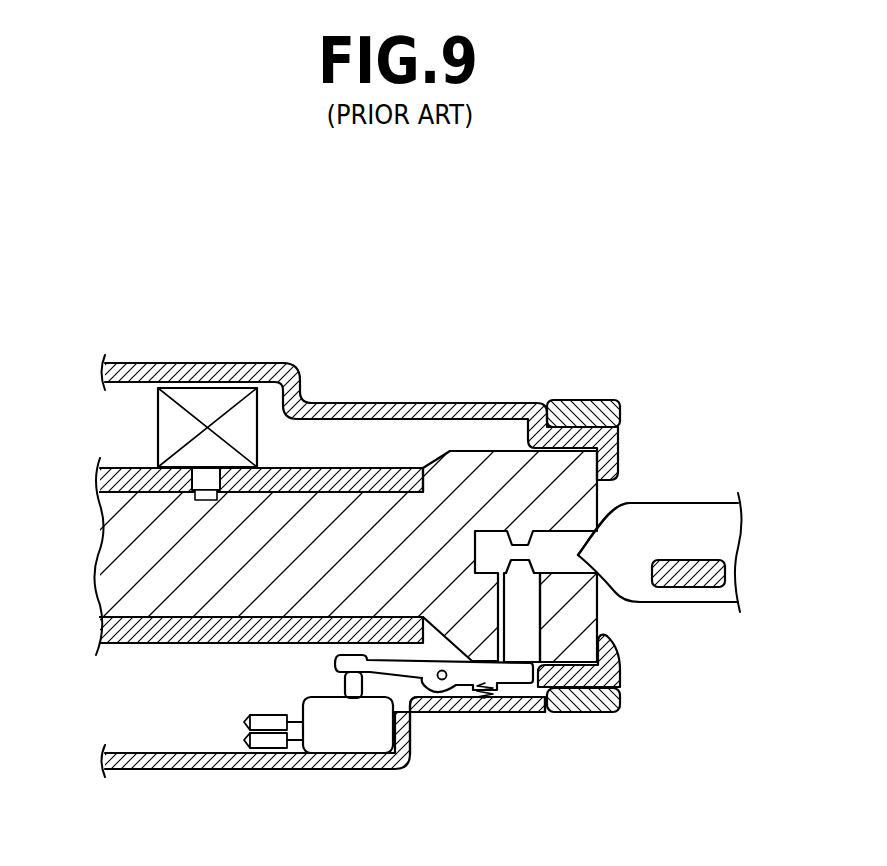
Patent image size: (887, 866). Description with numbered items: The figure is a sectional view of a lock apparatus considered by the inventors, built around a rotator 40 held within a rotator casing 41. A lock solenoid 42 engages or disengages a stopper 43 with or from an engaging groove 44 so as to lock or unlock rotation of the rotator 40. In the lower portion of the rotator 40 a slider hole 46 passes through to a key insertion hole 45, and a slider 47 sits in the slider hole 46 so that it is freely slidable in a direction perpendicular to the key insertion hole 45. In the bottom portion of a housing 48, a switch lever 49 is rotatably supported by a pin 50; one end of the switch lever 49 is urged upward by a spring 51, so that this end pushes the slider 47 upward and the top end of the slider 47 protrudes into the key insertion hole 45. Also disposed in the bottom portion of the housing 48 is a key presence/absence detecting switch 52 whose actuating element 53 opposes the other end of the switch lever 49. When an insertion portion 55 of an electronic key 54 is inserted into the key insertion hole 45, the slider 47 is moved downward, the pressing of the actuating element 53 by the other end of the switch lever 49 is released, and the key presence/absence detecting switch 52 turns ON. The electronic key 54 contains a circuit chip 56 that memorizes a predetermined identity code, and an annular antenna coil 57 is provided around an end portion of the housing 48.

The rotator 40 is at (440, 455).
The rotator casing 41 is at (147, 645).
The lock solenoid 42 is at (158, 420).
The stopper 43 is at (207, 473).
The engaging groove 44 is at (205, 502).
The key insertion hole 45 is at (583, 548).
The slider hole 46 is at (528, 643).
The slider 47 is at (617, 673).
The housing 48 is at (185, 770).
The switch lever 49 is at (413, 745).
The pin 50 is at (447, 688).
The spring 51 is at (497, 702).
The key presence/absence detecting switch 52 is at (330, 740).
The actuating element 53 is at (345, 691).
The electronic key 54 is at (735, 500).
The insertion portion 55 is at (490, 545).
The circuit chip 56 is at (722, 561).
The annular antenna coil 57 is at (592, 400).